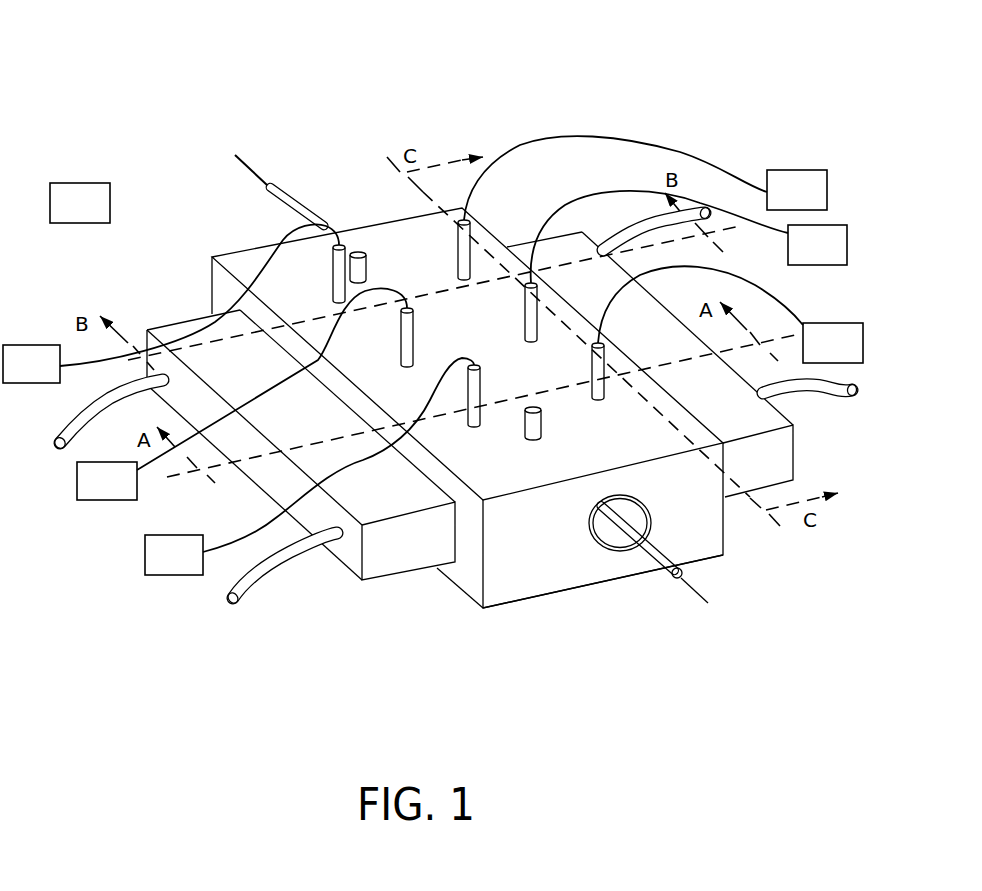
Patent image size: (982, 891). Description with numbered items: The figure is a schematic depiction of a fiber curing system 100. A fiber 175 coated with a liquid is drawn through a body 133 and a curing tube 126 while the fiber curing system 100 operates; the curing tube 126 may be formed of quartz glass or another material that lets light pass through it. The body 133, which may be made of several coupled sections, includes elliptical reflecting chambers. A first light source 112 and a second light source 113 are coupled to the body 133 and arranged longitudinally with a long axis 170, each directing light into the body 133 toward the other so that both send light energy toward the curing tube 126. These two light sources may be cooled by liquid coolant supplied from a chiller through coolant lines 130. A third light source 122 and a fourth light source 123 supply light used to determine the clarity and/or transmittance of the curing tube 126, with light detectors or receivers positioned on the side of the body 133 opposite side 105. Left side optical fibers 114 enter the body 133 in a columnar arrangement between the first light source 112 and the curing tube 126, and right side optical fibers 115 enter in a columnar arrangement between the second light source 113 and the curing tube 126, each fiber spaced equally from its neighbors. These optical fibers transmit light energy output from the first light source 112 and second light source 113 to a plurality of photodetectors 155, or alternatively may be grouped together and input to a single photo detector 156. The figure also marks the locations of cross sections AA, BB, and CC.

The fiber curing system 100 is at (136, 62).
The side 105 is at (673, 443).
The first light source 112 is at (434, 568).
The second light source 113 is at (795, 448).
The left side optical fibers 114 is at (333, 236).
The right side optical fibers 115 is at (540, 141).
The third light source 122 is at (363, 250).
The fourth light source 123 is at (545, 432).
The curing tube 126 is at (604, 546).
The coolant lines 130 is at (78, 443).
The body 133 is at (501, 608).
The photodetectors 155 is at (433, 355).
The single photo detector 156 is at (80, 203).
The long axis 170 is at (683, 582).
The fiber 175 is at (666, 576).